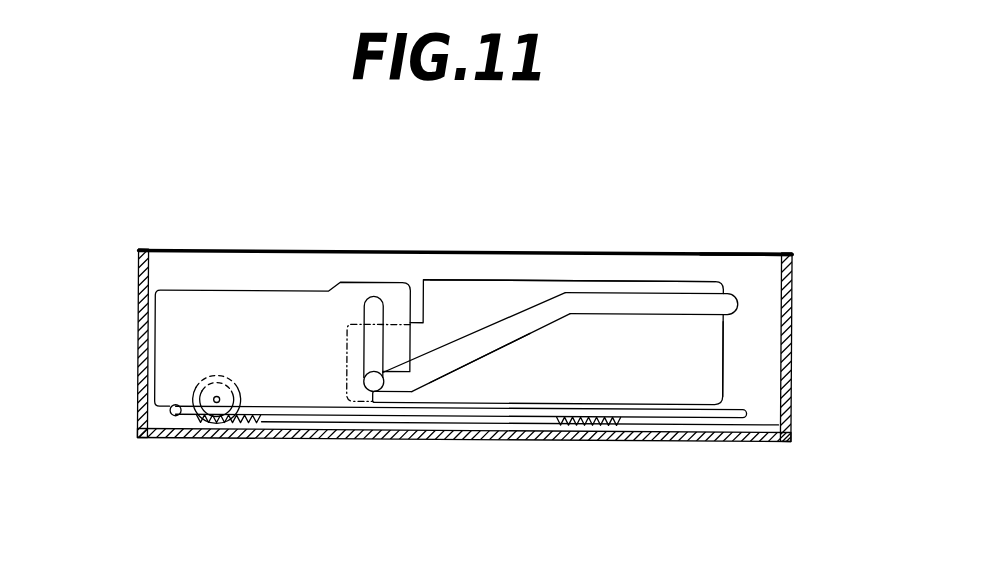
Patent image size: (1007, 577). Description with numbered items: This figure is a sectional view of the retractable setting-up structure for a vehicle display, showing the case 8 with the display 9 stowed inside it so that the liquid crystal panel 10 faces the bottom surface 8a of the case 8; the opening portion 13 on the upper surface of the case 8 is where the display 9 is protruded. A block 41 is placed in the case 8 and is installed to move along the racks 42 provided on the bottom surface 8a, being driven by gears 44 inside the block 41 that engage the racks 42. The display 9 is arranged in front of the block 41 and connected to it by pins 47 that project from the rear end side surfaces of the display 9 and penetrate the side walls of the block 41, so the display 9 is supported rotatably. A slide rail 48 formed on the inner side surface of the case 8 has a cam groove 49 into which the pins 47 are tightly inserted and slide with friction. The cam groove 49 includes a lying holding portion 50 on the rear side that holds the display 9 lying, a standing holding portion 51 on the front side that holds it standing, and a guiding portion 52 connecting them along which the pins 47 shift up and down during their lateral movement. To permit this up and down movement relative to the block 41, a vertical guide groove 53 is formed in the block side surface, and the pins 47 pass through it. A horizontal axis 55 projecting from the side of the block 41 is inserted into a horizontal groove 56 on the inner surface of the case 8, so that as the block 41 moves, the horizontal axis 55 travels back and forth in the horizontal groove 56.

The case 8 is at (793, 323).
The bottom surface of the case 8a is at (661, 432).
The display 9 is at (725, 365).
The liquid crystal panel 10 is at (579, 409).
The opening portion 13 is at (783, 254).
The block 41 is at (265, 292).
The rack 42 is at (446, 424).
The gear 44 is at (231, 420).
The pin 47 is at (373, 395).
The slide rail 48 is at (587, 280).
The cam groove 49 is at (491, 357).
The lying holding portion 50 is at (392, 372).
The standing holding portion 51 is at (655, 292).
The guiding portion 52 is at (494, 322).
The vertical guide groove 53 is at (365, 296).
The horizontal axis 55 is at (174, 419).
The horizontal groove 56 is at (311, 417).